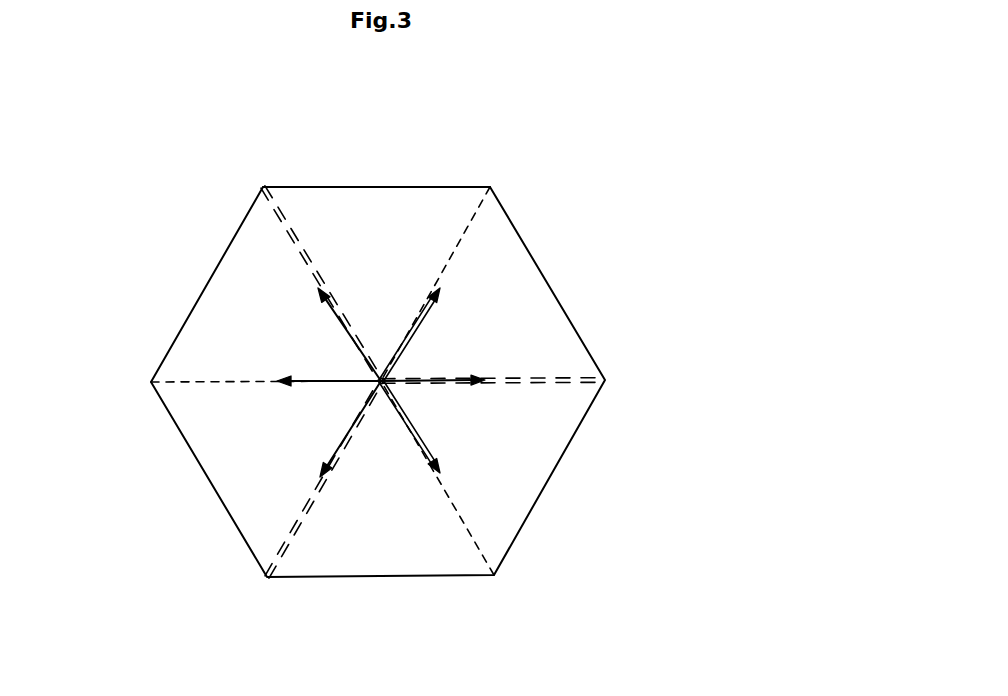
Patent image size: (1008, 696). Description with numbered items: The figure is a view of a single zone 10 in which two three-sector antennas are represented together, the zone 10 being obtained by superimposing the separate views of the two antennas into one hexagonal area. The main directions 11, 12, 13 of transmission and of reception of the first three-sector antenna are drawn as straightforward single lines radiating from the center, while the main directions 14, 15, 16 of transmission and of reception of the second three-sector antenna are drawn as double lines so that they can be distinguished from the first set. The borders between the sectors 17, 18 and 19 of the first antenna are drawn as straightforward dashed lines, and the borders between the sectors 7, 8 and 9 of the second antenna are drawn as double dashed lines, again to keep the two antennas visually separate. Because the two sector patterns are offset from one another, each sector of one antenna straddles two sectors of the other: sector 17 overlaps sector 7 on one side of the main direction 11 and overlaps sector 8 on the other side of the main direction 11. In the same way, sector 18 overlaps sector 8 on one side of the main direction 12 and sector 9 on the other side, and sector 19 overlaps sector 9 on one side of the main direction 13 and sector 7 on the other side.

The sector 7 is at (487, 495).
The sector 8 is at (260, 230).
The sector 9 is at (448, 207).
The zone 10 is at (380, 187).
The main direction 11 is at (340, 440).
The main direction 12 is at (337, 313).
The main direction 13 is at (447, 380).
The main direction 14 is at (423, 433).
The main direction 15 is at (338, 380).
The main direction 16 is at (420, 325).
The sector 17 is at (272, 508).
The sector 18 is at (318, 240).
The sector 19 is at (505, 255).